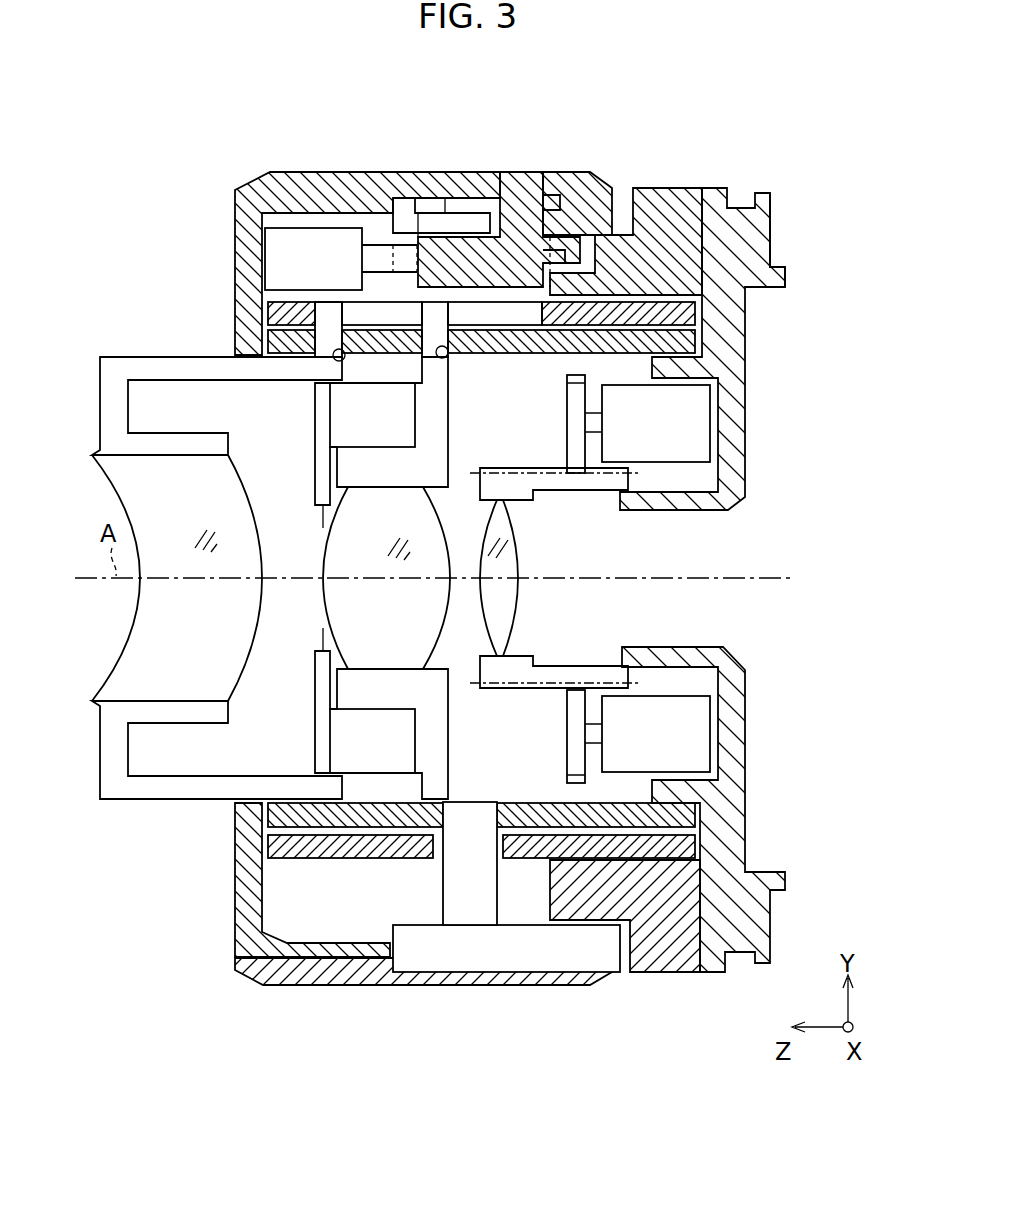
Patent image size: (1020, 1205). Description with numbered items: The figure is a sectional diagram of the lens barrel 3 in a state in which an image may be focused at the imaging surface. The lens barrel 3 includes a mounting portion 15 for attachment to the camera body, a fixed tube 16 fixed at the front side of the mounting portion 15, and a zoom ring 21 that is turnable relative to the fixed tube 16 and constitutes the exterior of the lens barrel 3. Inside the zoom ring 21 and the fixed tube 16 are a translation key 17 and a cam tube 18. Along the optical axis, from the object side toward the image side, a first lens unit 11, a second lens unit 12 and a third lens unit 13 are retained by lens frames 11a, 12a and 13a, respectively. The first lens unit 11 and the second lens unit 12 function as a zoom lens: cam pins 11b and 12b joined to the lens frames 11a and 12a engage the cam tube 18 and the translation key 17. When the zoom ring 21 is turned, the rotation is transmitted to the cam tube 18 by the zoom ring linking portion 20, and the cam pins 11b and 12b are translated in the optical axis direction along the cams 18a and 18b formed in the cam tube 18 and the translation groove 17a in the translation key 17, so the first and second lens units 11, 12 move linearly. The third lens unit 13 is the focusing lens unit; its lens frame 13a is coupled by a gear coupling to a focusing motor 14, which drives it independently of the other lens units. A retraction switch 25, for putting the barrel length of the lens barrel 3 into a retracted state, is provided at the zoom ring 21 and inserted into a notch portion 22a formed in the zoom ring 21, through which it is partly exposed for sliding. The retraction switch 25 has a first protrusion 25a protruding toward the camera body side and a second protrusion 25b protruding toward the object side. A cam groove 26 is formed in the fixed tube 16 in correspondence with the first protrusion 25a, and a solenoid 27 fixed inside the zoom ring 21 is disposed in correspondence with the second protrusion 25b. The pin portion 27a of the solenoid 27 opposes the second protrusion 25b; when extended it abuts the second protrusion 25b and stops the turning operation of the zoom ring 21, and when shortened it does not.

The lens barrel 3 is at (380, 150).
The zoom ring 21 is at (350, 172).
The cam pin 11b is at (333, 300).
The pin portion 27a is at (398, 258).
The second protrusion 25b is at (452, 272).
The cam pin 12b is at (440, 292).
The retraction switch 25 is at (513, 190).
The notch portion 22a is at (548, 178).
The first protrusion 25a is at (545, 236).
The fixed tube 16 is at (682, 198).
The mounting portion 15 is at (720, 200).
The cam groove 26 is at (692, 240).
The solenoid 27 is at (282, 252).
The cam tube 18 is at (298, 340).
The translation key 17 is at (672, 315).
The translation groove 17a is at (530, 323).
The focusing motor 14 is at (672, 407).
The lens frame 11a is at (104, 377).
The cam 18a is at (338, 360).
The cam 18b is at (445, 358).
The lens frame 12a is at (438, 455).
The first lens unit 11 is at (136, 488).
The second lens unit 12 is at (345, 600).
The lens frame 13a is at (523, 498).
The third lens unit 13 is at (500, 633).
The zoom ring linking portion 20 is at (462, 907).